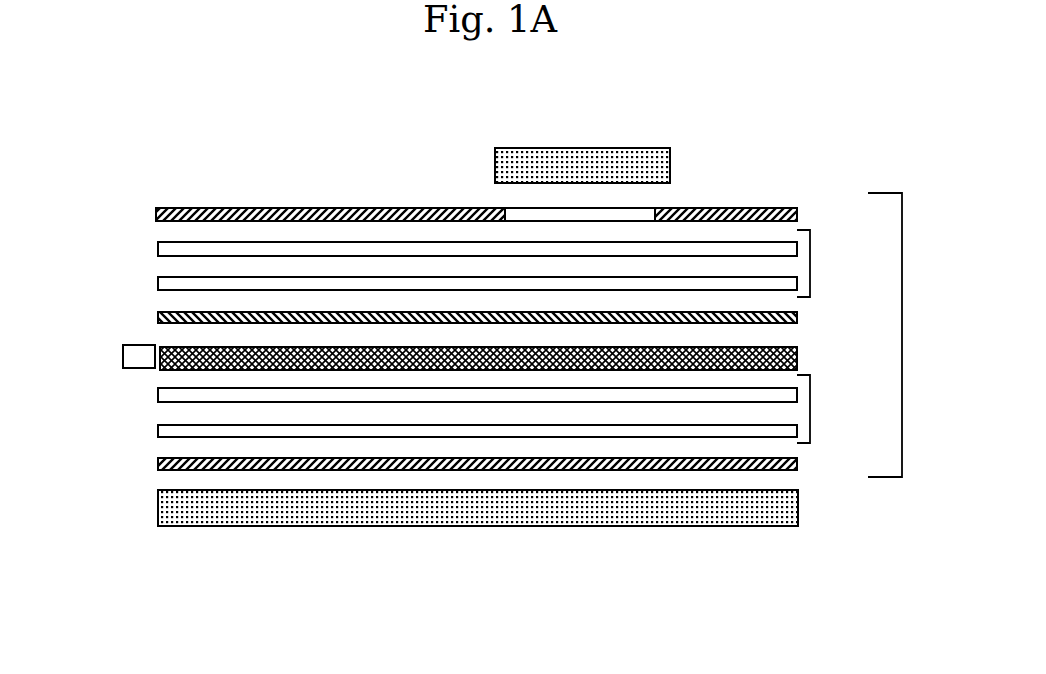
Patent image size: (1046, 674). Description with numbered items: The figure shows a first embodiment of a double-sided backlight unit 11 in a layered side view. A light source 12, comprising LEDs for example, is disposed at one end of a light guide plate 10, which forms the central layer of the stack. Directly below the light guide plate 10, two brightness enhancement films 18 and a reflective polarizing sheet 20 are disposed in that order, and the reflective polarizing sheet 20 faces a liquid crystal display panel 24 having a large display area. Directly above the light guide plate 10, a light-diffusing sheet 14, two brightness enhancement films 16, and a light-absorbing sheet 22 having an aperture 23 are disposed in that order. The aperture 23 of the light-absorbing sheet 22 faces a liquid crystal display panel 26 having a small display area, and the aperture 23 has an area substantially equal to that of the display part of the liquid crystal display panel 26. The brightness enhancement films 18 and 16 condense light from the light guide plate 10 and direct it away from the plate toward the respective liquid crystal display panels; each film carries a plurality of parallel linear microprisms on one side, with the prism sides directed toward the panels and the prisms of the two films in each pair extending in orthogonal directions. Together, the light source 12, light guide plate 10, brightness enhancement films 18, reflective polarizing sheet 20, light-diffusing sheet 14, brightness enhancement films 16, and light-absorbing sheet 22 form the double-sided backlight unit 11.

The light guide plate 10 is at (798, 350).
The double-sided backlight unit 11 is at (902, 447).
The light source 12 is at (123, 353).
The light-diffusing sheet 14 is at (797, 311).
The brightness enhancement films 16 is at (810, 262).
The brightness enhancement films 18 is at (810, 415).
The reflective polarizing sheet 20 is at (798, 463).
The light-absorbing sheet 22 is at (351, 208).
The aperture 23 is at (557, 213).
The liquid crystal display panel 24 is at (798, 507).
The liquid crystal display panel 26 is at (558, 148).